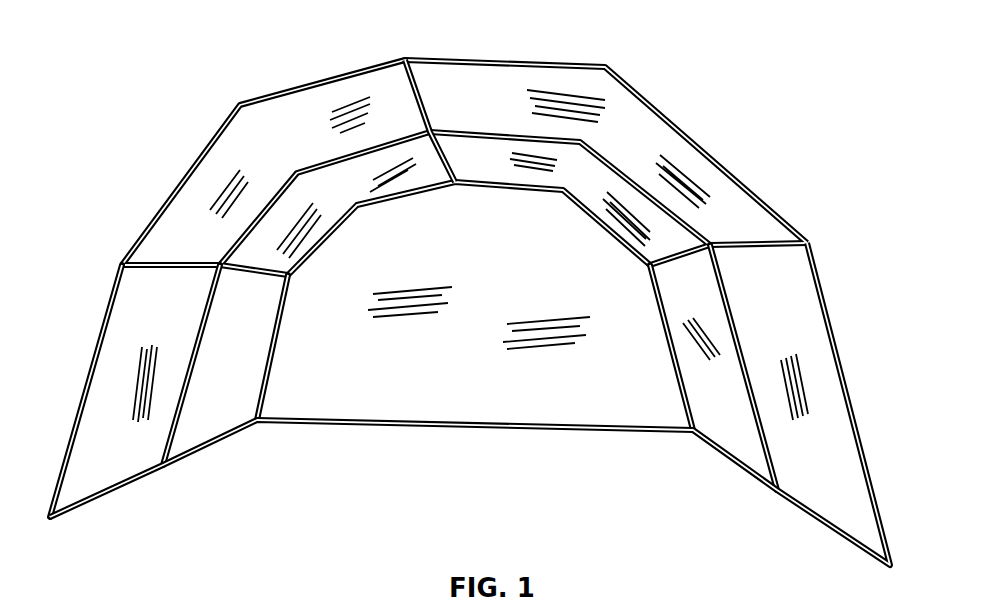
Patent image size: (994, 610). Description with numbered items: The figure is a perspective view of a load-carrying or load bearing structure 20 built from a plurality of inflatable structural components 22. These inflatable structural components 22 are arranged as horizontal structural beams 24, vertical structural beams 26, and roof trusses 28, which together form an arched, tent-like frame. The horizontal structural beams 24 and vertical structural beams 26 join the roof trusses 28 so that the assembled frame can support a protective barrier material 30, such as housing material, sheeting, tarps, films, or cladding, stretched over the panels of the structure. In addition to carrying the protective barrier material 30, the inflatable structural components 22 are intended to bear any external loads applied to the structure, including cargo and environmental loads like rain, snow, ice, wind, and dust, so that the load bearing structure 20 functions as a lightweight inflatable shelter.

The load-carrying structure 20 is at (489, 285).
The inflatable structural components 22 is at (158, 265).
The horizontal structural beams 24 is at (253, 277).
The vertical structural beams 26 is at (178, 405).
The roof trusses 28 is at (525, 138).
The protective barrier material 30 is at (133, 390).